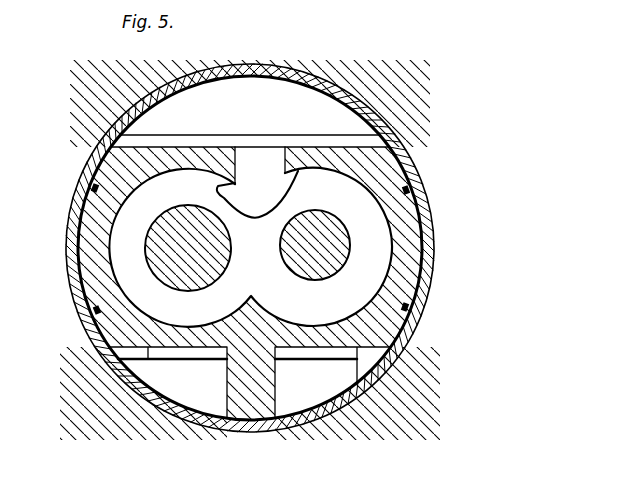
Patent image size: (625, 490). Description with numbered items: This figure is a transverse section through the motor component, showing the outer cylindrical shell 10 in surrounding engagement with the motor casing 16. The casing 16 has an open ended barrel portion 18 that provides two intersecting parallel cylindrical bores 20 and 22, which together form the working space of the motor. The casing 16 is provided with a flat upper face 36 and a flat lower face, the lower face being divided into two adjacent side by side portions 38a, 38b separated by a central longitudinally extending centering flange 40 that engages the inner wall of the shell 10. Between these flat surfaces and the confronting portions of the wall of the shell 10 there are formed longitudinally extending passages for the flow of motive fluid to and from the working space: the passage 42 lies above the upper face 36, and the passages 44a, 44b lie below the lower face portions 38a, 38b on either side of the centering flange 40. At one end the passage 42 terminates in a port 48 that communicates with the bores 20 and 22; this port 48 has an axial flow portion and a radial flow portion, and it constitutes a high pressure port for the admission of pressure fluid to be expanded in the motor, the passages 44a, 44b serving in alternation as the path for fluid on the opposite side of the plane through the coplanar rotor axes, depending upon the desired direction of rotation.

The outer cylindrical shell 10 is at (432, 262).
The motor casing 16 is at (396, 322).
The barrel portion 18 is at (83, 238).
The cylindrical bore 20 is at (130, 197).
The cylindrical bore 22 is at (385, 208).
The flat upper face 36 is at (197, 147).
The passage 42 is at (304, 122).
The port 48 is at (262, 189).
The lower face portion 38a is at (148, 347).
The lower face portion 38b is at (355, 360).
The passage 44a is at (188, 390).
The passage 44b is at (320, 392).
The centering flange 40 is at (247, 407).